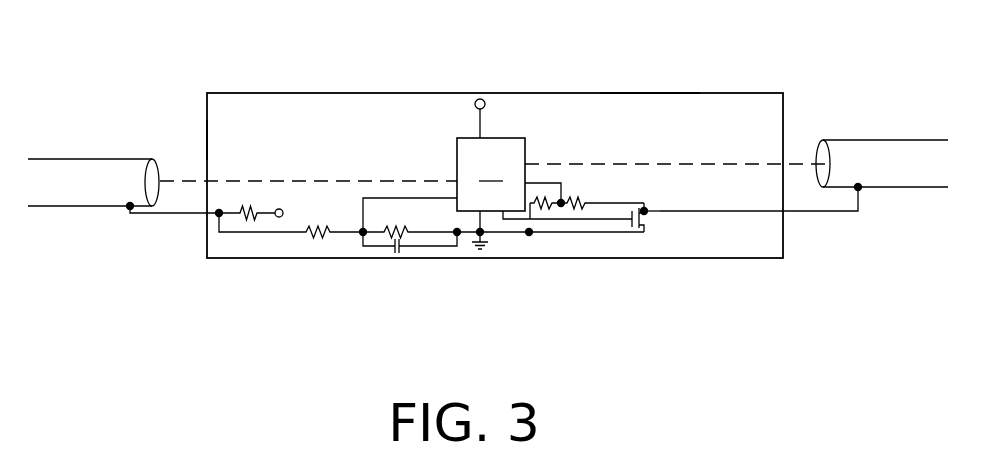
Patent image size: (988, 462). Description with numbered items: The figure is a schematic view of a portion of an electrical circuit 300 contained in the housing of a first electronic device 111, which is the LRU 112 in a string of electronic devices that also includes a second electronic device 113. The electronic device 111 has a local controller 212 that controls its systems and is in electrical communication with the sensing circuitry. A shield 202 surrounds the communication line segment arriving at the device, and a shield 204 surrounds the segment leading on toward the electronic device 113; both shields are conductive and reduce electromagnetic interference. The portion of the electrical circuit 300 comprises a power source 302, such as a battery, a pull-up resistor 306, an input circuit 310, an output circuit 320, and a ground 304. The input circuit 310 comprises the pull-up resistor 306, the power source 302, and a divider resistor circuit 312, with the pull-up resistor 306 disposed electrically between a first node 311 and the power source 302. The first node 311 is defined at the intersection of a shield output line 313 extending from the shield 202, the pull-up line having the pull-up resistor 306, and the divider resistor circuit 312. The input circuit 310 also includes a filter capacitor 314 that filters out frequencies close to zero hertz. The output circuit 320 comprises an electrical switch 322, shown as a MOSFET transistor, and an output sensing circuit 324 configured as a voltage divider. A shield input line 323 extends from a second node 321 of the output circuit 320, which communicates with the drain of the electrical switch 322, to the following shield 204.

The electronic device 111 is at (285, 91).
The electronic device 113 is at (628, 93).
The LRU 112 is at (336, 151).
The controller 212 is at (491, 165).
The shield 202 is at (83, 158).
The shield 204 is at (887, 140).
The electrical circuit 300 is at (204, 137).
The power source 302 is at (279, 208).
The ground 304 is at (471, 247).
The pull-up resistor 306 is at (248, 214).
The input circuit 310 is at (189, 247).
The first node 311 is at (216, 214).
The divider resistor circuit 312 is at (271, 246).
The shield output line 313 is at (160, 213).
The filter capacitor 314 is at (382, 254).
The output circuit 320 is at (735, 248).
The second node 321 is at (644, 210).
The electrical switch 322 is at (636, 240).
The shield input line 323 is at (815, 212).
The output sensing circuit 324 is at (578, 179).